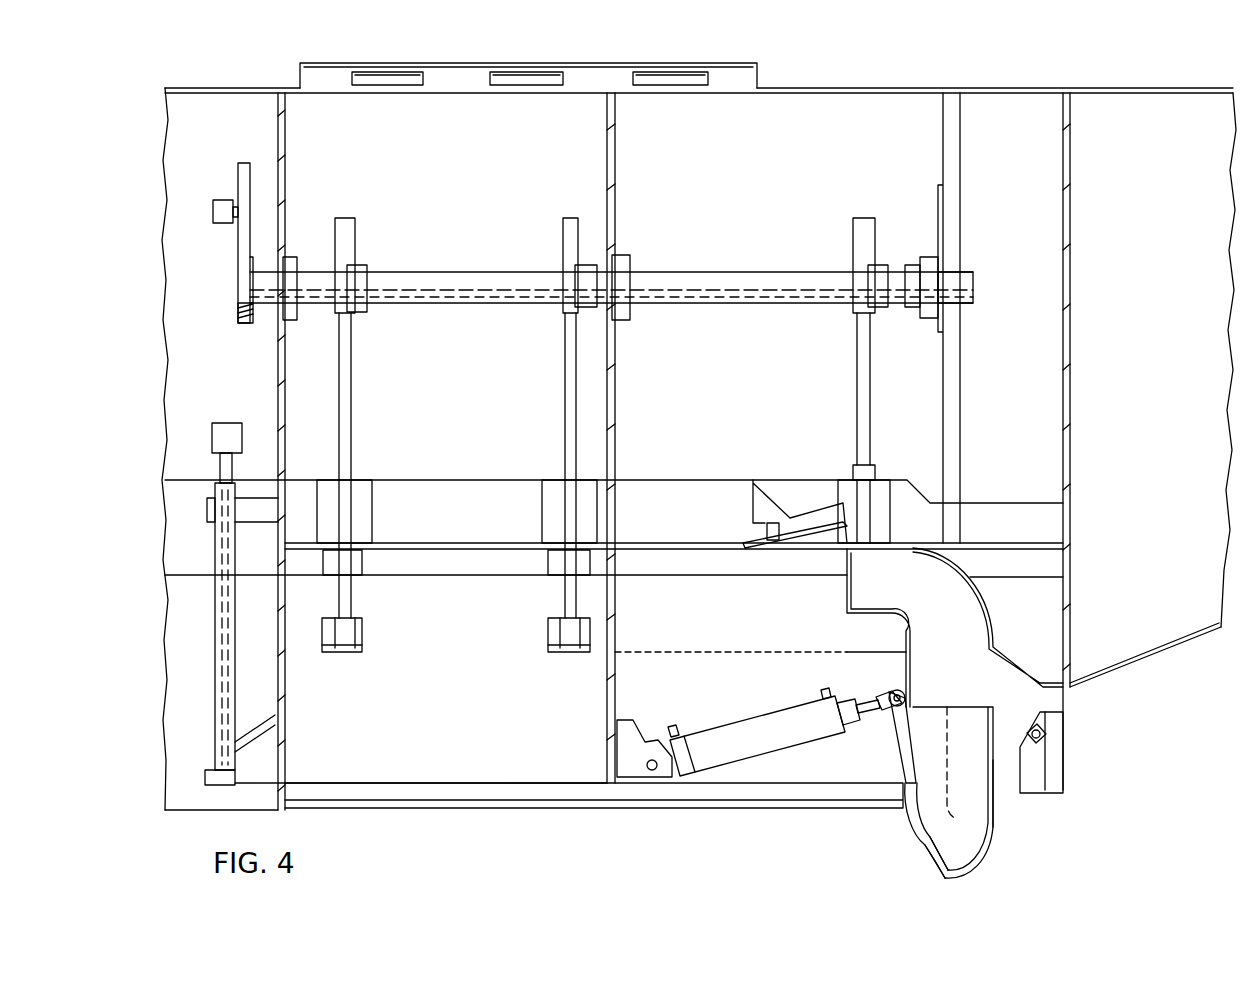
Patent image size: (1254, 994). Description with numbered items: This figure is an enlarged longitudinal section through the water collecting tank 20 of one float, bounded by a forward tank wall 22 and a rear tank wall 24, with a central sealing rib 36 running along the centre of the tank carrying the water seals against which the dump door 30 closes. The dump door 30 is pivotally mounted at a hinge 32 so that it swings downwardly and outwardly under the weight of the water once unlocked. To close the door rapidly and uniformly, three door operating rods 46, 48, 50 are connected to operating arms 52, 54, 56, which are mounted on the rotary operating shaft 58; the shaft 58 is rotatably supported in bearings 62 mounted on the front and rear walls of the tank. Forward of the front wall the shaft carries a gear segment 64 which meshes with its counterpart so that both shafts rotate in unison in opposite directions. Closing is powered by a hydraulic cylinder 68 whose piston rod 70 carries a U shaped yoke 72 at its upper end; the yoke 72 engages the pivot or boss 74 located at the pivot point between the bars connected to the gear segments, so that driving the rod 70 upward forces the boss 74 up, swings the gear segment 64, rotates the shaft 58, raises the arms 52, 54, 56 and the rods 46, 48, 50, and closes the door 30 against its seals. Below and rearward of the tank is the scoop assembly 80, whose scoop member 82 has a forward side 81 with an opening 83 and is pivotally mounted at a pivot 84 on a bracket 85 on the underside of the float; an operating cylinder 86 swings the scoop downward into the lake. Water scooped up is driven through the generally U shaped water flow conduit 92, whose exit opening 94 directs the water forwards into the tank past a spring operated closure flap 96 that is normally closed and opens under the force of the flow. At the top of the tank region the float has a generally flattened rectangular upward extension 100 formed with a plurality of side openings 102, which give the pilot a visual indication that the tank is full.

The water collecting tank 20 is at (523, 709).
The forward tank wall 22 is at (285, 205).
The rear tank wall 24 is at (1070, 210).
The left hand dump door 30 is at (465, 671).
The hinge 32 is at (860, 465).
The central sealing rib 36 is at (553, 795).
The door operating rod 46 is at (858, 335).
The door operating rod 48 is at (565, 335).
The door operating rod 50 is at (347, 425).
The operating arm 52 is at (870, 235).
The operating arm 54 is at (575, 270).
The operating arm 56 is at (345, 242).
The rotary operating shaft 58 is at (430, 280).
The bearing 62 is at (300, 265).
The gear segment 64 is at (240, 165).
The hydraulic cylinder 68 is at (233, 690).
The piston rod 70 is at (232, 470).
The U shaped yoke 72 is at (222, 425).
The pivot or boss 74 is at (222, 222).
The scoop assembly 80 is at (975, 807).
The forward side 81 is at (900, 830).
The scoop member 82 is at (945, 872).
The opening 83 is at (928, 860).
The pivot 84 is at (1045, 790).
The bracket 85 is at (1003, 827).
The operating cylinder 86 is at (745, 745).
The water flow conduit 92 is at (993, 615).
The exit opening 94 is at (847, 608).
The closure flap 96 is at (805, 540).
The upward extension 100 is at (592, 63).
The side opening 102 is at (678, 78).